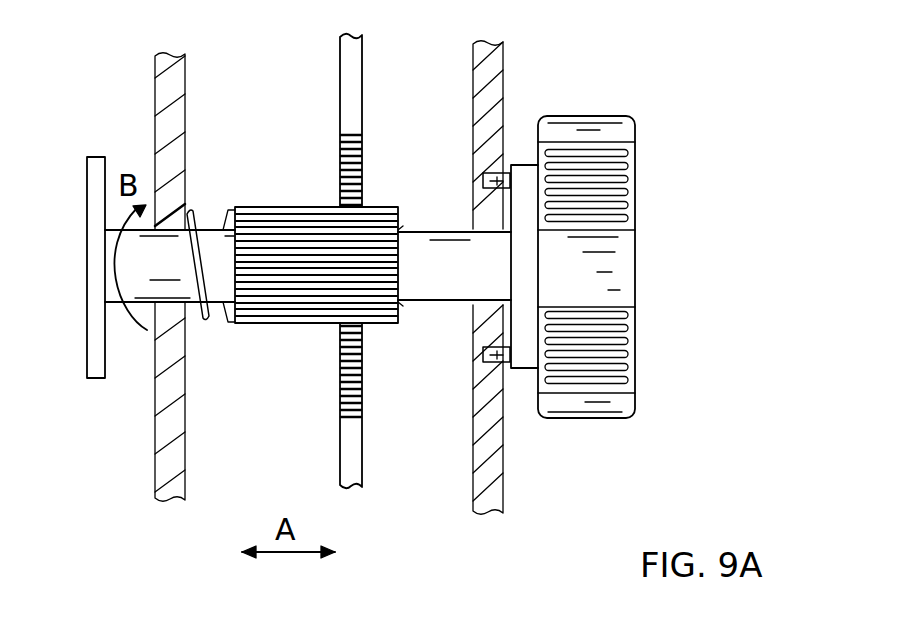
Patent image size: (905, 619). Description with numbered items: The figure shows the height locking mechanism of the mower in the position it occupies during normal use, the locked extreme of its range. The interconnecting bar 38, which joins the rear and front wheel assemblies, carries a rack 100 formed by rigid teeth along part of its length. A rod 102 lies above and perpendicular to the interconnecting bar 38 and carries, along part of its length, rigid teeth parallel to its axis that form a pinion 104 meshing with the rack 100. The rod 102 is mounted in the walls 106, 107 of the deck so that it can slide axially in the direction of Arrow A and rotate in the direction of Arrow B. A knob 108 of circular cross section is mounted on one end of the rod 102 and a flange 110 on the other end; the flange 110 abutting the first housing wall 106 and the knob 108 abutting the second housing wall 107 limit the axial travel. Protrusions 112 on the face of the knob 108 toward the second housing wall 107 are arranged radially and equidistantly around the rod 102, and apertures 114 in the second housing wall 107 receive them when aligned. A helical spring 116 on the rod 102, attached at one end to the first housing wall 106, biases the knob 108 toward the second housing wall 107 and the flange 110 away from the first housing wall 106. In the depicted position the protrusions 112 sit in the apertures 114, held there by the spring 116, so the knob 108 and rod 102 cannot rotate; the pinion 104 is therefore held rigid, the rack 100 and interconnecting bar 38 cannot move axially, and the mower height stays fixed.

The interconnecting bar 38 is at (352, 46).
The rack 100 is at (338, 156).
The rod 102 is at (478, 274).
The pinion 104 is at (290, 212).
The first housing wall 106 is at (166, 462).
The second housing wall 107 is at (498, 464).
The knob 108 is at (625, 420).
The flange 110 is at (95, 178).
The protrusions 112 is at (483, 174).
The apertures 114 is at (482, 188).
The helical spring 116 is at (212, 318).